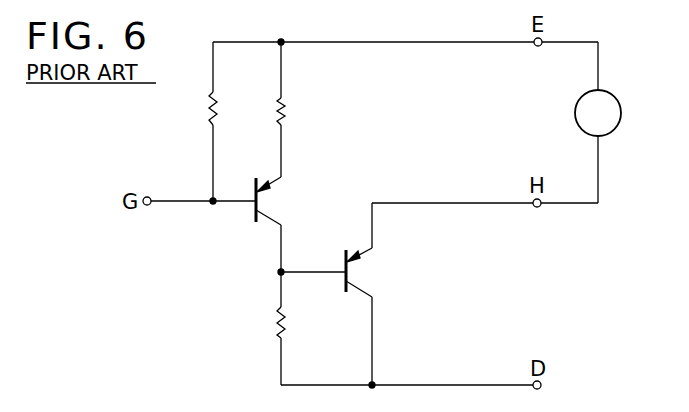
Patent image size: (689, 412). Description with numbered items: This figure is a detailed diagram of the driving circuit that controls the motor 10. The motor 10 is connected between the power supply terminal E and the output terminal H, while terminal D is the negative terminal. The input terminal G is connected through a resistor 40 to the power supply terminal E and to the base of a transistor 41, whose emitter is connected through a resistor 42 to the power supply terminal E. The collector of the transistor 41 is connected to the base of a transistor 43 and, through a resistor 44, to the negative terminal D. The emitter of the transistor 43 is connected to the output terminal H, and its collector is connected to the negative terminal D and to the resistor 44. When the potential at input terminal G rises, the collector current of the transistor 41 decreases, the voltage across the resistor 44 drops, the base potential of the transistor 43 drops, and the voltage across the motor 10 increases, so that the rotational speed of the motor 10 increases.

The motor 10 is at (575, 110).
The resistor 40 is at (207, 109).
The transistor 41 is at (263, 200).
The resistor 42 is at (285, 112).
The transistor 43 is at (352, 270).
The resistor 44 is at (270, 316).